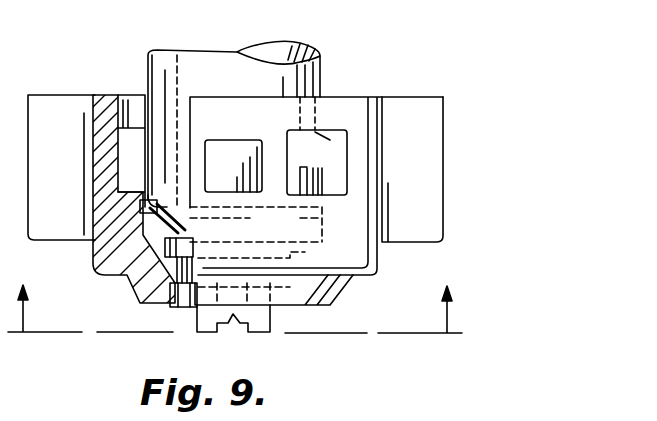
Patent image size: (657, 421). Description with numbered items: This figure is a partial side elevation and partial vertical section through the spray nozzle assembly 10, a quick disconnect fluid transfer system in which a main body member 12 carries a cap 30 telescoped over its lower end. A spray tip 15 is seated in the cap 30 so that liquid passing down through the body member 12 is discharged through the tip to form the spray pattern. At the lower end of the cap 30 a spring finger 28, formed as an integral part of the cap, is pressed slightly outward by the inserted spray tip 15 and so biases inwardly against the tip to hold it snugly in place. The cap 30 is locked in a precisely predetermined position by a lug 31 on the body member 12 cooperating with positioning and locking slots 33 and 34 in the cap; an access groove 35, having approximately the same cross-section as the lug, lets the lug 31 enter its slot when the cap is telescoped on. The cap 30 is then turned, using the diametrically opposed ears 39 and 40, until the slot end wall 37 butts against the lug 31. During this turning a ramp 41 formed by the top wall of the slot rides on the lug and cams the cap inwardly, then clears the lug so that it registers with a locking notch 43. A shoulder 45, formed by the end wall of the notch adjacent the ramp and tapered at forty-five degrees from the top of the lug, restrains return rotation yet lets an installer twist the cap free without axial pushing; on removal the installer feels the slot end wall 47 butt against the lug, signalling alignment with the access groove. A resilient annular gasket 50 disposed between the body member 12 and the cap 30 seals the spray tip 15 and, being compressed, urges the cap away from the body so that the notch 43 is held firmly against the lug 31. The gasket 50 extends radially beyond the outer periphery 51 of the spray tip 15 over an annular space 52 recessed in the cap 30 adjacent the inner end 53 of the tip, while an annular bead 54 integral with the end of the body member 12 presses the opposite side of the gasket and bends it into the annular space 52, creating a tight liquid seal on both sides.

The spray nozzle assembly 10 is at (233, 330).
The main body member 12 is at (312, 47).
The spray tip 15 is at (207, 333).
The spring finger 28 is at (175, 301).
The cap 30 is at (110, 93).
The lug 31 is at (207, 175).
The positioning and locking slot 33 is at (349, 143).
The positioning and locking slot 34 is at (138, 158).
The access groove 35 is at (298, 152).
The slot end wall 37 is at (207, 142).
The ear 39 is at (410, 243).
The ear 40 is at (41, 245).
The ramp 41 is at (315, 132).
The locking notch 43 is at (244, 147).
The shoulder 45 is at (246, 160).
The slot end wall 47 is at (350, 176).
The resilient annular gasket 50 is at (96, 256).
The outer periphery of spray tip 51 is at (158, 268).
The annular space 52 is at (127, 270).
The inner end of spray tip 53 is at (190, 222).
The annular bead 54 is at (150, 226).